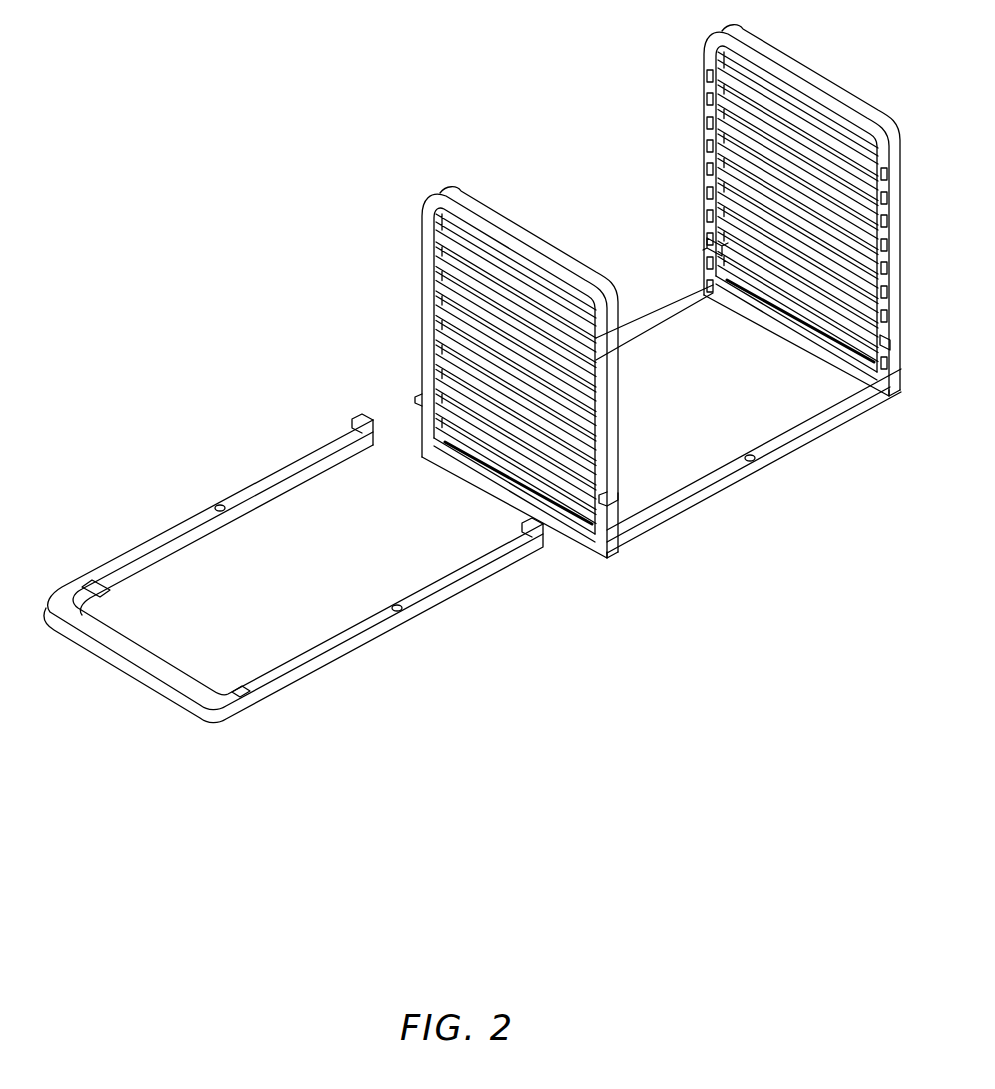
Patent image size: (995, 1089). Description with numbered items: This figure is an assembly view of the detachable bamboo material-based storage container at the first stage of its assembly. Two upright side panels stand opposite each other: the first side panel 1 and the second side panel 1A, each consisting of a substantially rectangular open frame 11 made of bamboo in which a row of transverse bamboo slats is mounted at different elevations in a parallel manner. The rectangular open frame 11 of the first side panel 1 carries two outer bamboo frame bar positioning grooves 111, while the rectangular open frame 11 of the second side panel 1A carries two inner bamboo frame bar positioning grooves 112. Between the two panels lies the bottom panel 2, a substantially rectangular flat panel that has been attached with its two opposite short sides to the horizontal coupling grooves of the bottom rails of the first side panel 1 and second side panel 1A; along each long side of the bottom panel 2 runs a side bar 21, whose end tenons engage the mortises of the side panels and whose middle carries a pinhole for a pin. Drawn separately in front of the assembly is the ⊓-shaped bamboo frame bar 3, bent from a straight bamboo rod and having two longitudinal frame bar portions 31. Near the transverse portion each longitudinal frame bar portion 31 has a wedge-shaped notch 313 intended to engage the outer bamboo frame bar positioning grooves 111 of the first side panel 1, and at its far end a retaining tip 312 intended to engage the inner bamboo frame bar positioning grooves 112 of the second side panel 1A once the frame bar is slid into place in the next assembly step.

The first side panel 1 is at (407, 317).
The second side panel 1A is at (688, 151).
The rectangular open frame 11 is at (465, 205).
The outer bamboo frame bar positioning grooves 111 is at (420, 398).
The inner bamboo frame bar positioning grooves 112 is at (705, 243).
The bottom panel 2 is at (765, 425).
The side bar 21 is at (705, 485).
The ⊓-shaped bamboo frame bar 3 is at (180, 512).
The longitudinal frame bar portions 31 is at (358, 628).
The retaining tips 312 is at (345, 432).
The wedge-shaped notches 313 is at (96, 586).